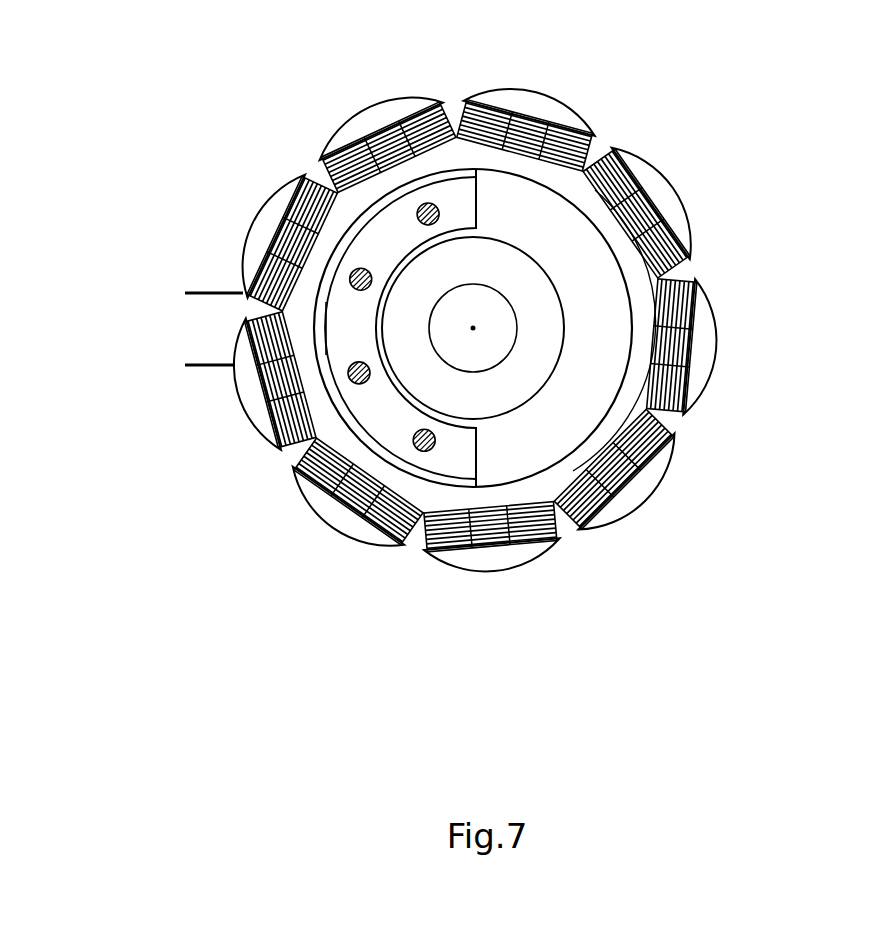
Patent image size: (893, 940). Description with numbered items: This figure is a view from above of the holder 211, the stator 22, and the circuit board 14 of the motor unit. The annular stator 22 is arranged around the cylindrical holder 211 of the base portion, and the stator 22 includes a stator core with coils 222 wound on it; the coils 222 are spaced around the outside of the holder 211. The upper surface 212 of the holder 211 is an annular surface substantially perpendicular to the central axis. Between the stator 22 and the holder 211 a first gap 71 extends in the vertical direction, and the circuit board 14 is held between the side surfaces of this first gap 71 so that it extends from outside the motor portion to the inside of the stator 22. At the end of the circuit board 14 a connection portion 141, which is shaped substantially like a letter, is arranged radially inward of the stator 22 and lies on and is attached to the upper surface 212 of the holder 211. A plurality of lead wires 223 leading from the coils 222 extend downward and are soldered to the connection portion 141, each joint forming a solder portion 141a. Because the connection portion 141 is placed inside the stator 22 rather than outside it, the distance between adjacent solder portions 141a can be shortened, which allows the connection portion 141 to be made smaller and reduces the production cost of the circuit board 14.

The circuit board 14 is at (427, 454).
The connection portion 141 is at (417, 456).
The solder portion 141a is at (421, 206).
The first gap 71 is at (348, 311).
The stator 22 is at (531, 574).
The coils 222 is at (428, 104).
The lead wires 223 is at (500, 106).
The holder 211 is at (606, 431).
The upper surface 212 is at (600, 377).